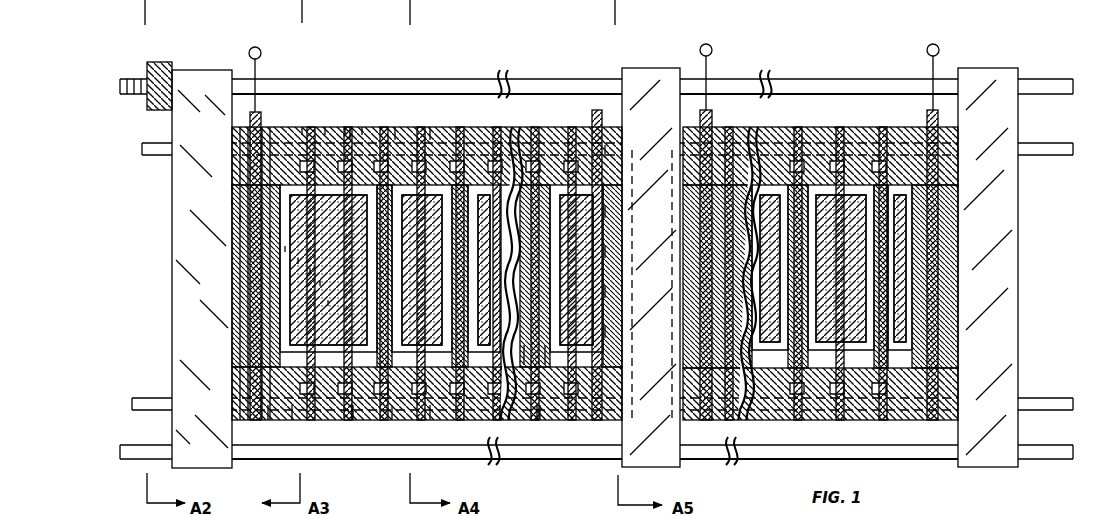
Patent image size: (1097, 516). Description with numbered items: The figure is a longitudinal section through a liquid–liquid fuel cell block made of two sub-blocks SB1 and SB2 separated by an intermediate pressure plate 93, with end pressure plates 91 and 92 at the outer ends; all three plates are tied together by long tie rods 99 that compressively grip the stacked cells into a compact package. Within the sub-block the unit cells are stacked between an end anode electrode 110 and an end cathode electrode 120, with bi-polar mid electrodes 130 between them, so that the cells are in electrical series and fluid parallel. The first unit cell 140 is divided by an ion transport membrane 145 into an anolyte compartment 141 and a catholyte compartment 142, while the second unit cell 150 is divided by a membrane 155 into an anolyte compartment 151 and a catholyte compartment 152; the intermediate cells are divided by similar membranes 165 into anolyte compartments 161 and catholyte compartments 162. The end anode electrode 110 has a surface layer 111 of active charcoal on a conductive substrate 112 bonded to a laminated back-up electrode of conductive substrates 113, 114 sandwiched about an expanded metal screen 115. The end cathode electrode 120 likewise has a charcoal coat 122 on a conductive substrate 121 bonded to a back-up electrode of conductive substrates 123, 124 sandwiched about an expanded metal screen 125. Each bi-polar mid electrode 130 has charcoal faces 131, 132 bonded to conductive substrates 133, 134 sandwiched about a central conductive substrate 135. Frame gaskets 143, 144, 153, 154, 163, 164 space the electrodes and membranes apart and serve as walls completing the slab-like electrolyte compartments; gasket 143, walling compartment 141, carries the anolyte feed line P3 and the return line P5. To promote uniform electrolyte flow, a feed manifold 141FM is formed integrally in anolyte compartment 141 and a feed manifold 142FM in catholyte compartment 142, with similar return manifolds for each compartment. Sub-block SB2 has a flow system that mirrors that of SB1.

The pressure plate 91 is at (208, 70).
The pressure plate 92 is at (1000, 68).
The pressure plate 93 is at (660, 68).
The tie rods 99 is at (840, 75).
The feed line P3 is at (172, 148).
The return line P5 is at (132, 396).
The end cathode electrode 120 is at (598, 432).
The bi-polar mid electrodes 130 is at (364, 254).
The frame gasket 143 is at (281, 127).
The second unit cell 150 is at (564, 122).
The charcoal face 131 is at (412, 420).
The sub-block SB1 is at (485, 122).
The sub-block SB2 is at (804, 118).
The feed manifold 142FM is at (232, 184).
The feed manifold 141FM is at (222, 203).
The end anode electrode 110 is at (240, 216).
The surface layer 111 is at (272, 234).
The conductive substrate 112 is at (287, 248).
The conductive substrate 113 is at (300, 260).
The conductive substrate 114 is at (312, 270).
The expanded metal screen 115 is at (322, 282).
The charcoal face 132 is at (330, 302).
The charcoal coat 122 is at (612, 150).
The conductive substrate 121 is at (610, 212).
The expanded metal screen 125 is at (610, 252).
The conductive substrate 124 is at (608, 292).
The conductive substrate 123 is at (606, 333).
The anolyte compartment 151 is at (530, 361).
The catholyte compartment 152 is at (572, 363).
The first unit cell 140 is at (310, 113).
The frame gasket 144 is at (347, 127).
The ion transport membrane 145 is at (327, 127).
The central conductive substrate 135 is at (364, 127).
The frame gasket 163 is at (352, 127).
The membrane 165 is at (396, 127).
The frame gasket 164 is at (431, 127).
The conductive substrate 133 is at (352, 417).
The frame gasket 153 is at (503, 421).
The frame gasket 154 is at (540, 421).
The anolyte compartment 141 is at (256, 500).
The catholyte compartment 142 is at (291, 423).
The anolyte compartment 161 is at (330, 470).
The conductive substrate 134 is at (392, 423).
The catholyte compartment 162 is at (466, 486).
The membrane 155 is at (537, 425).